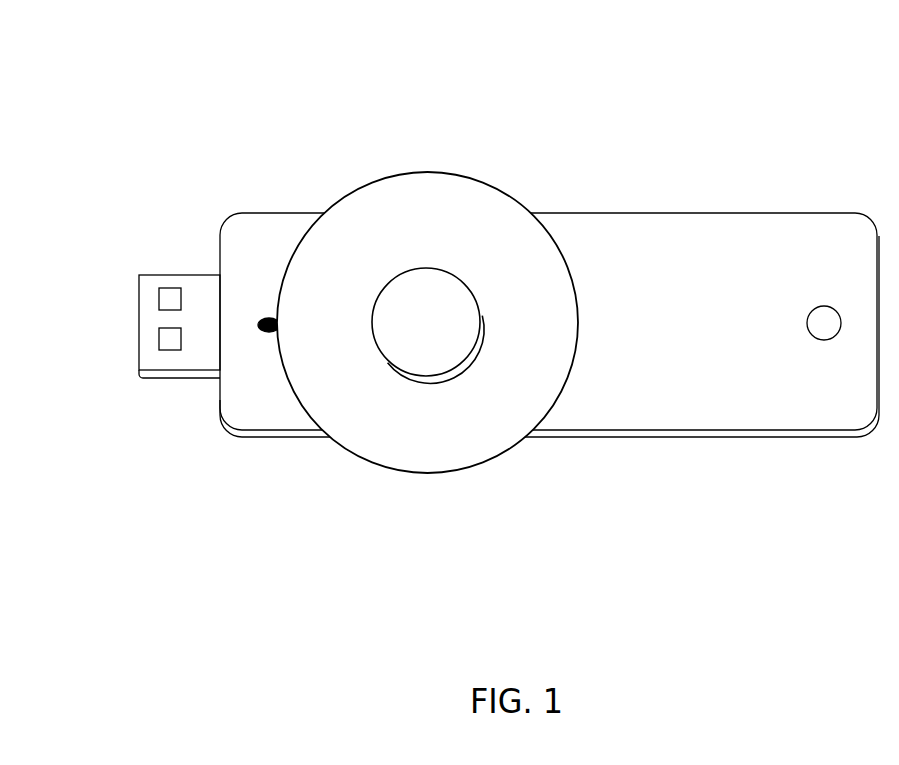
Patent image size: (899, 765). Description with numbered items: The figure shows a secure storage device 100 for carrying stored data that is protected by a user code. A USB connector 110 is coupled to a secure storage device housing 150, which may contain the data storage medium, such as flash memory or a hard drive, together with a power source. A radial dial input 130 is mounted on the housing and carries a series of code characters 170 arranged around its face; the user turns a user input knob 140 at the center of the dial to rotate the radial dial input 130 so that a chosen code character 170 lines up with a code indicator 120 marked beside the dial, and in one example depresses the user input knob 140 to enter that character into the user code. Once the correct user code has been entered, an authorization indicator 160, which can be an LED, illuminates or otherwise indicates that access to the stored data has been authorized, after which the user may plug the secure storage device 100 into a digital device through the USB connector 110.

The secure storage device 100 is at (252, 158).
The USB connector 110 is at (160, 275).
The code indicator 120 is at (270, 316).
The radial dial input 130 is at (503, 192).
The user input knob 140 is at (478, 297).
The secure storage device housing 150 is at (636, 213).
The authorization indicator 160 is at (820, 304).
The code character 170 is at (387, 219).